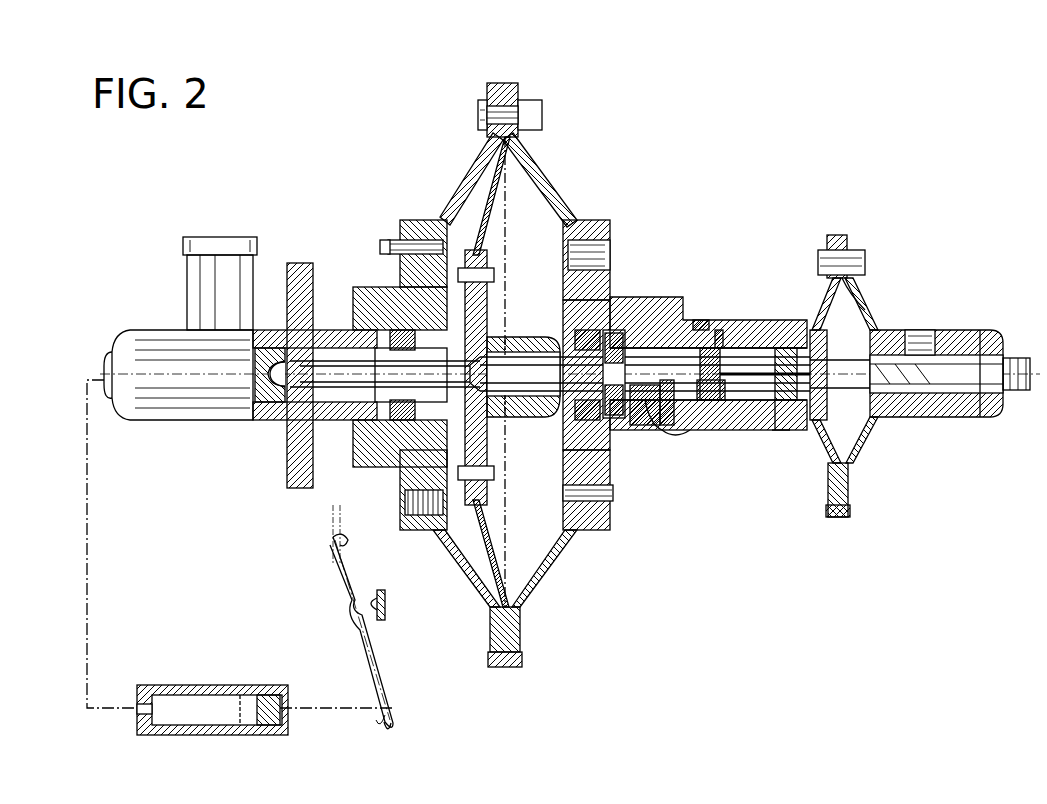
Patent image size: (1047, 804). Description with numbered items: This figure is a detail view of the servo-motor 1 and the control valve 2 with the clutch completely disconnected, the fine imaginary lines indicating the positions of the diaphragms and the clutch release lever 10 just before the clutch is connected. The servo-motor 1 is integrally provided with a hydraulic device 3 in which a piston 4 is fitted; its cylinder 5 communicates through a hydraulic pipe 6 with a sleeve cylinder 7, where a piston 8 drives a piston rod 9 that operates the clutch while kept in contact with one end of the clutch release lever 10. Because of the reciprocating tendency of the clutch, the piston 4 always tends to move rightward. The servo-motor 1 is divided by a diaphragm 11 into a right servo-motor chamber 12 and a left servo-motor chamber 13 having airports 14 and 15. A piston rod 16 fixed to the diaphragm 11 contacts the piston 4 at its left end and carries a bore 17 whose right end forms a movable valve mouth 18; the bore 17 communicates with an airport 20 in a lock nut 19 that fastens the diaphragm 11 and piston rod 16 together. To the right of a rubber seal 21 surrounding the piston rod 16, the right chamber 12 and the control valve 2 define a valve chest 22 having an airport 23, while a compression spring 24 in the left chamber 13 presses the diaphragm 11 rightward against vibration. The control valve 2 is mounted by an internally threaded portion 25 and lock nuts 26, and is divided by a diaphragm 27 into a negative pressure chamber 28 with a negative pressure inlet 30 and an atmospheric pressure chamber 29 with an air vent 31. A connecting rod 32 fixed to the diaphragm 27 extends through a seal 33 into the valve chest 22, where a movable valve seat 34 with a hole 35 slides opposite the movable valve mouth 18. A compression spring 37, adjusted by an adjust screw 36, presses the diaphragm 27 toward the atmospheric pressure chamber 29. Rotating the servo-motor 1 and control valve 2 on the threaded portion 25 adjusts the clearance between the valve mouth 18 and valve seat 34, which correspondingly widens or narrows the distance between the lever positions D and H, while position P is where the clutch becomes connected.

The servo-motor 1 is at (522, 640).
The control valve 2 is at (849, 485).
The hydraulic device 3 is at (183, 430).
The piston 4 is at (272, 422).
The cylinder 5 is at (245, 420).
The hydraulic pipe 6 is at (90, 528).
The sleeve cylinder 7 is at (202, 685).
The piston 8 is at (265, 695).
The piston rod 9 is at (325, 700).
The clutch release lever 10 is at (380, 685).
The diaphragm 11 is at (475, 597).
The right servo-motor chamber 12 is at (552, 553).
The left servo-motor chamber 13 is at (462, 558).
The airport 14 is at (612, 300).
The airport 15 is at (405, 512).
The piston rod 16 is at (362, 362).
The bore 17 is at (630, 455).
The movable valve mouth 18 is at (660, 430).
The lock nut 19 is at (520, 420).
The airport 20 is at (512, 340).
The rubber seal 21 is at (618, 335).
The valve chest 22 is at (742, 430).
The airport 23 is at (680, 440).
The compression spring 24 is at (395, 460).
The internally threaded portion 25 is at (725, 345).
The lock nuts 26 is at (700, 320).
The diaphragm 27 is at (858, 300).
The negative pressure chamber 28 is at (860, 425).
The atmospheric pressure chamber 29 is at (820, 440).
The negative pressure inlet 30 is at (918, 332).
The air vent 31 is at (785, 432).
The connecting rod 32 is at (745, 370).
The seal 33 is at (788, 348).
The movable valve seat 34 is at (700, 432).
The hole 35 is at (718, 330).
The adjust screw 36 is at (1022, 395).
The compression spring 37 is at (910, 395).
The position D is at (328, 515).
The position H is at (332, 531).
The position P is at (336, 551).